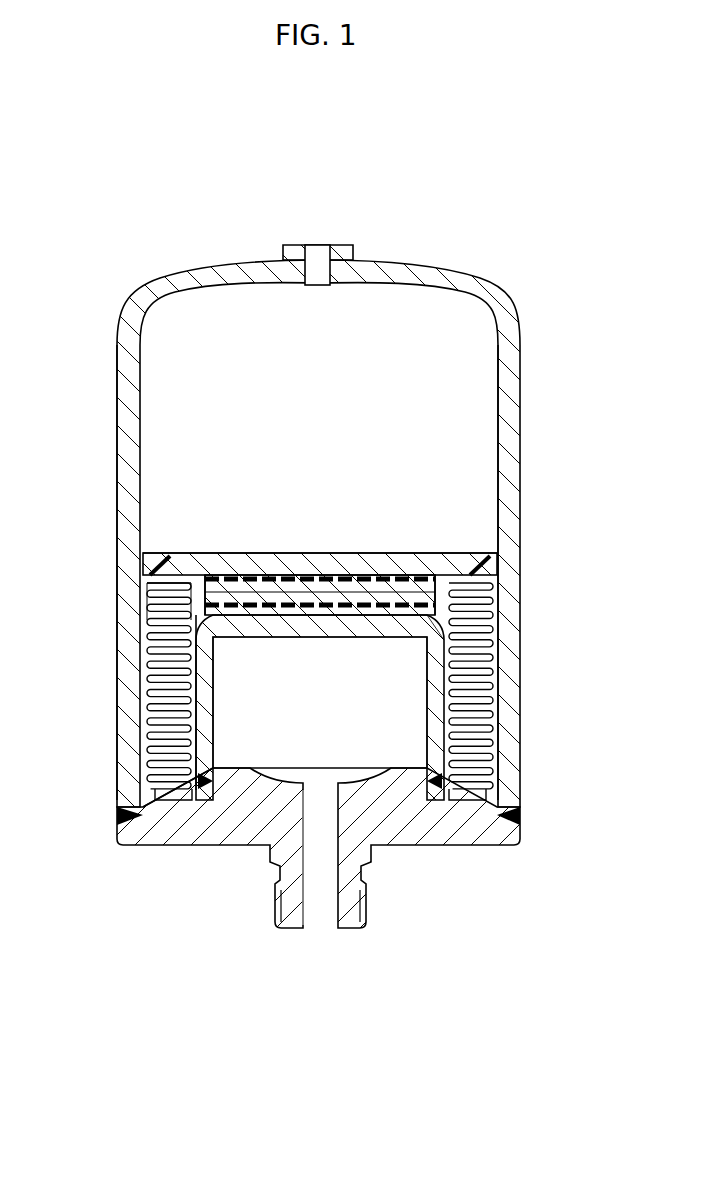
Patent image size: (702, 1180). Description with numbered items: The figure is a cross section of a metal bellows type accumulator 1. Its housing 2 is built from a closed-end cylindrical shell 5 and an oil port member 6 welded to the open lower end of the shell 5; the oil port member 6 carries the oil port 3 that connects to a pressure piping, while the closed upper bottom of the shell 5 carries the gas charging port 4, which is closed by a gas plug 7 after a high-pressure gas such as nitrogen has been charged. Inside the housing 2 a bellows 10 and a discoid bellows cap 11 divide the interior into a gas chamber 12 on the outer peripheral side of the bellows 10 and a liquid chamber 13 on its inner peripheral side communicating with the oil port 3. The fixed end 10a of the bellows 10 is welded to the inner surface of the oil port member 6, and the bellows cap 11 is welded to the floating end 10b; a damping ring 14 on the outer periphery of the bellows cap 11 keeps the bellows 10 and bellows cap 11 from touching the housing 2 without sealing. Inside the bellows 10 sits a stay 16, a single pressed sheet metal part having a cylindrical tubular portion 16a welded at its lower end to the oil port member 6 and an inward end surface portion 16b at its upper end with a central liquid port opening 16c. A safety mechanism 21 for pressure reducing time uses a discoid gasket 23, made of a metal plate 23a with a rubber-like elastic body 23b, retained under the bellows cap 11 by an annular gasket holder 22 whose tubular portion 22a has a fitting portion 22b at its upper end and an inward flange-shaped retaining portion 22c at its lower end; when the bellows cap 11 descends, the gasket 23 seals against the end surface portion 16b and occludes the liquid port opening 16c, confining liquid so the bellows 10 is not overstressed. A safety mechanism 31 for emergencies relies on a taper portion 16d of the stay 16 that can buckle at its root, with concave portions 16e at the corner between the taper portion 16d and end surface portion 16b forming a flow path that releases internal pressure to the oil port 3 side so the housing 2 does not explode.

The accumulator 1 is at (120, 290).
The accumulator housing 2 is at (483, 310).
The oil port 3 is at (328, 935).
The gas charging port 4 is at (330, 250).
The shell 5 is at (510, 350).
The oil port member 6 is at (383, 830).
The gas plug 7 is at (300, 247).
The bellows 10 is at (440, 712).
The fixed end 10a is at (458, 810).
The floating end 10b is at (485, 572).
The bellows cap 11 is at (305, 553).
The gas chamber 12 is at (359, 416).
The liquid chamber 13 is at (208, 660).
The damping ring 14 is at (213, 597).
The stay 16 is at (150, 690).
The tubular portion 16a is at (150, 792).
The end surface portion 16b is at (245, 575).
The liquid port opening 16c is at (280, 556).
The taper portion 16d is at (180, 580).
The concave portions 16e is at (222, 578).
The safety mechanism for a pressure reducing time 21 is at (262, 640).
The gasket holder 22 is at (460, 622).
The tubular portion 22a is at (455, 605).
The fitting portion 22b is at (440, 565).
The retaining portion 22c is at (450, 650).
The gasket 23 is at (355, 590).
The metal plate 23a is at (335, 575).
The rubber-like elastic body 23b is at (400, 603).
The safety mechanism for an emergency 31 is at (208, 790).